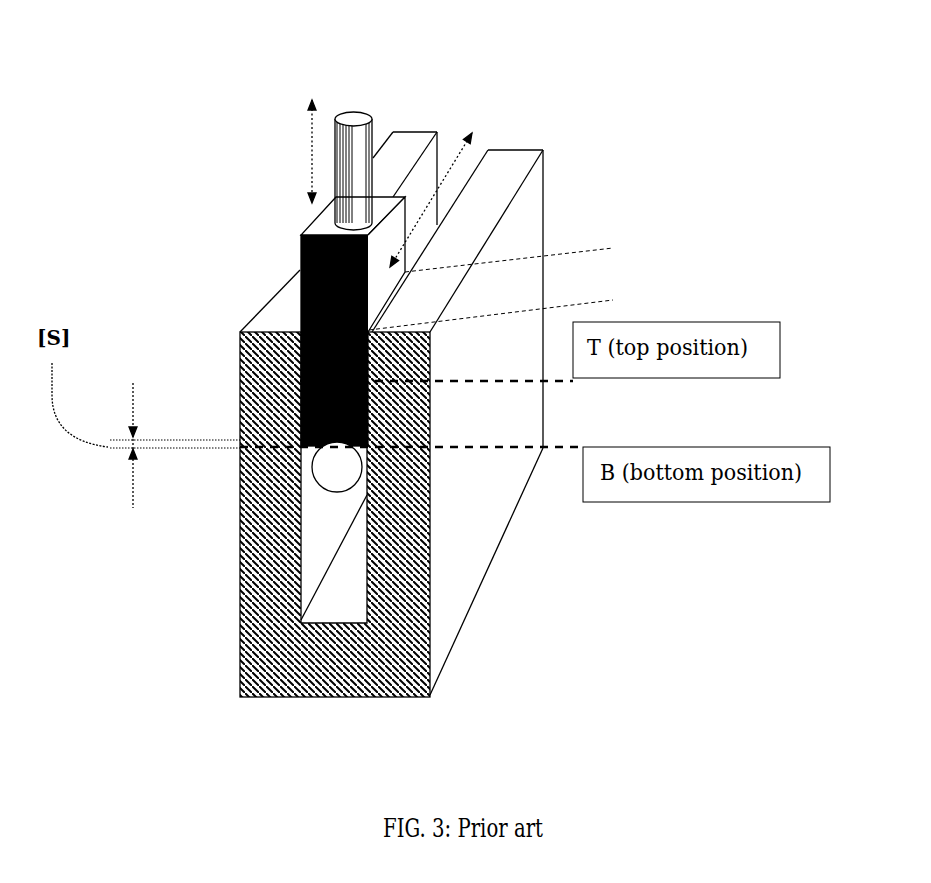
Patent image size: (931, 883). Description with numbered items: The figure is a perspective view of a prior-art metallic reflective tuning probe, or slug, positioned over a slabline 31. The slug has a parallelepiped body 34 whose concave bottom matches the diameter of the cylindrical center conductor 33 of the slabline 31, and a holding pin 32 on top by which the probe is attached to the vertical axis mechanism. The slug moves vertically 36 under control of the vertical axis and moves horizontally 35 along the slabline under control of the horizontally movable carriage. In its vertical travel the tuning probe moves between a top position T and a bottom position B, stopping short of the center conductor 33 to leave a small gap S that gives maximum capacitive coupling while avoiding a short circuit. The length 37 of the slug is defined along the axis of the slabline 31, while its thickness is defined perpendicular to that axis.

The slabline 31 is at (238, 600).
The holding pin 32 is at (345, 108).
The center conductor 33 is at (358, 491).
The body 34 is at (300, 287).
The horizontal movement 35 is at (448, 170).
The vertical movement 36 is at (310, 168).
The length 37 is at (557, 307).